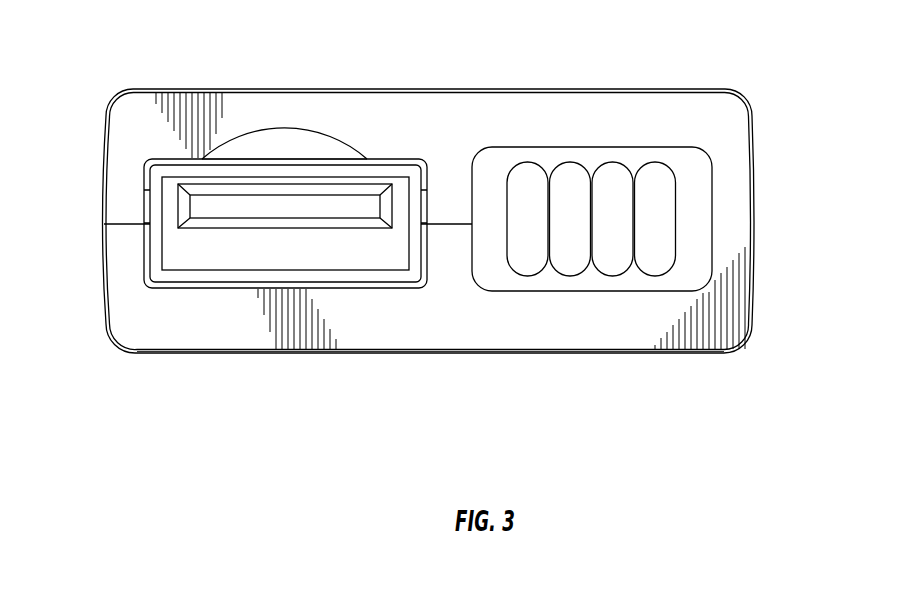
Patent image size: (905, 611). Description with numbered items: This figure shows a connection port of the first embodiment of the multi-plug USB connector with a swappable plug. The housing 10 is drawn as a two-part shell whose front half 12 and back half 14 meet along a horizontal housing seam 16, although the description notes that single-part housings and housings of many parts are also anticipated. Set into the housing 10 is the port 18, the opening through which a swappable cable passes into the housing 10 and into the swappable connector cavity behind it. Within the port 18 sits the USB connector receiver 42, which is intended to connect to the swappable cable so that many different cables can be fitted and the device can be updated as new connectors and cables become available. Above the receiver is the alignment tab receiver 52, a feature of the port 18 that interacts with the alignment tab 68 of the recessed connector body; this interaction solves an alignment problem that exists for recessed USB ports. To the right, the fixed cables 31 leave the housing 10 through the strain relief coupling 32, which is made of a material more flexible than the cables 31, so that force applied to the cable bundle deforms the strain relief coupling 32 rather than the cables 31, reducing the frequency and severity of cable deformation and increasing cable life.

The housing 10 is at (640, 362).
The housing 12 is at (137, 143).
The housing back half 14 is at (133, 326).
The seam line 16 is at (103, 225).
The port 18 is at (404, 156).
The cables 31 is at (664, 228).
The strain relief coupling 32 is at (690, 212).
The USB connector receiver 42 is at (260, 258).
The alignment tab receiver 52 is at (297, 125).
The alignment tab 68 is at (266, 156).